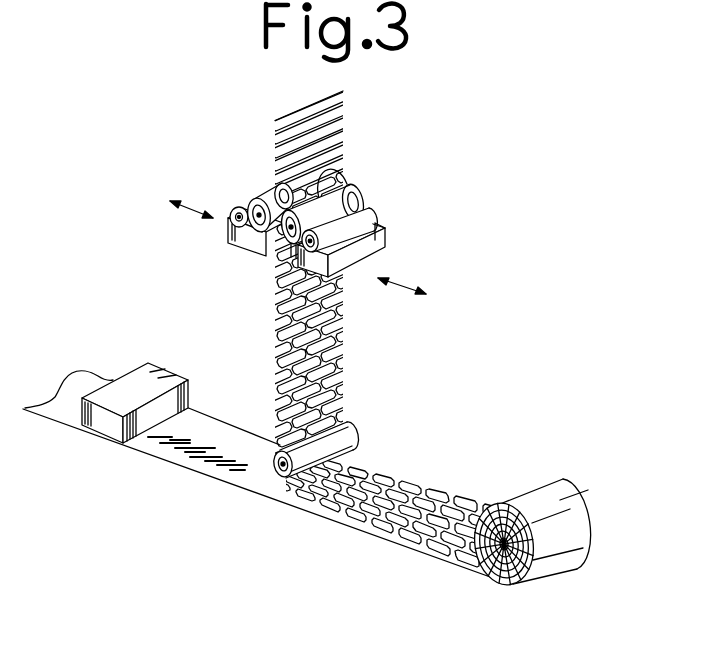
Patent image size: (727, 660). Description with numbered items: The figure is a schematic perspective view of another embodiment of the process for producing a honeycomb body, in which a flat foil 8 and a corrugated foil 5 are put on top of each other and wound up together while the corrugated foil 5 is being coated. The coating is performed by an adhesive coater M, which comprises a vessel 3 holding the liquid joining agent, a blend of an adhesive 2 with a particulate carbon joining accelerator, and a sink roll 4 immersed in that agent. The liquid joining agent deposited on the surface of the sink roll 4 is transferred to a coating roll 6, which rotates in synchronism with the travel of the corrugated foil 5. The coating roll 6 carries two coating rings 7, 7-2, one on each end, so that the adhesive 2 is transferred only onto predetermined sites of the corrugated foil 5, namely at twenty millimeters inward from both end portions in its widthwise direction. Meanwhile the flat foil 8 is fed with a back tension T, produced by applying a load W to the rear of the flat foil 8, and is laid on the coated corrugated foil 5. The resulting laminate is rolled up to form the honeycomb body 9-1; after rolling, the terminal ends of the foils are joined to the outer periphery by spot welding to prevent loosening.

The adhesive 2 is at (385, 249).
The vessel 3 is at (354, 267).
The sink roll 4 is at (363, 213).
The corrugated foil 5 is at (344, 107).
The coating roll 6 is at (313, 188).
The coating ring 7 is at (270, 181).
The coating ring 7-2 is at (344, 181).
The flat foil 8 is at (229, 433).
The honeycomb body 9-1 is at (533, 480).
The adhesive coater M is at (239, 259).
The load W is at (137, 386).
The back tension T is at (153, 472).